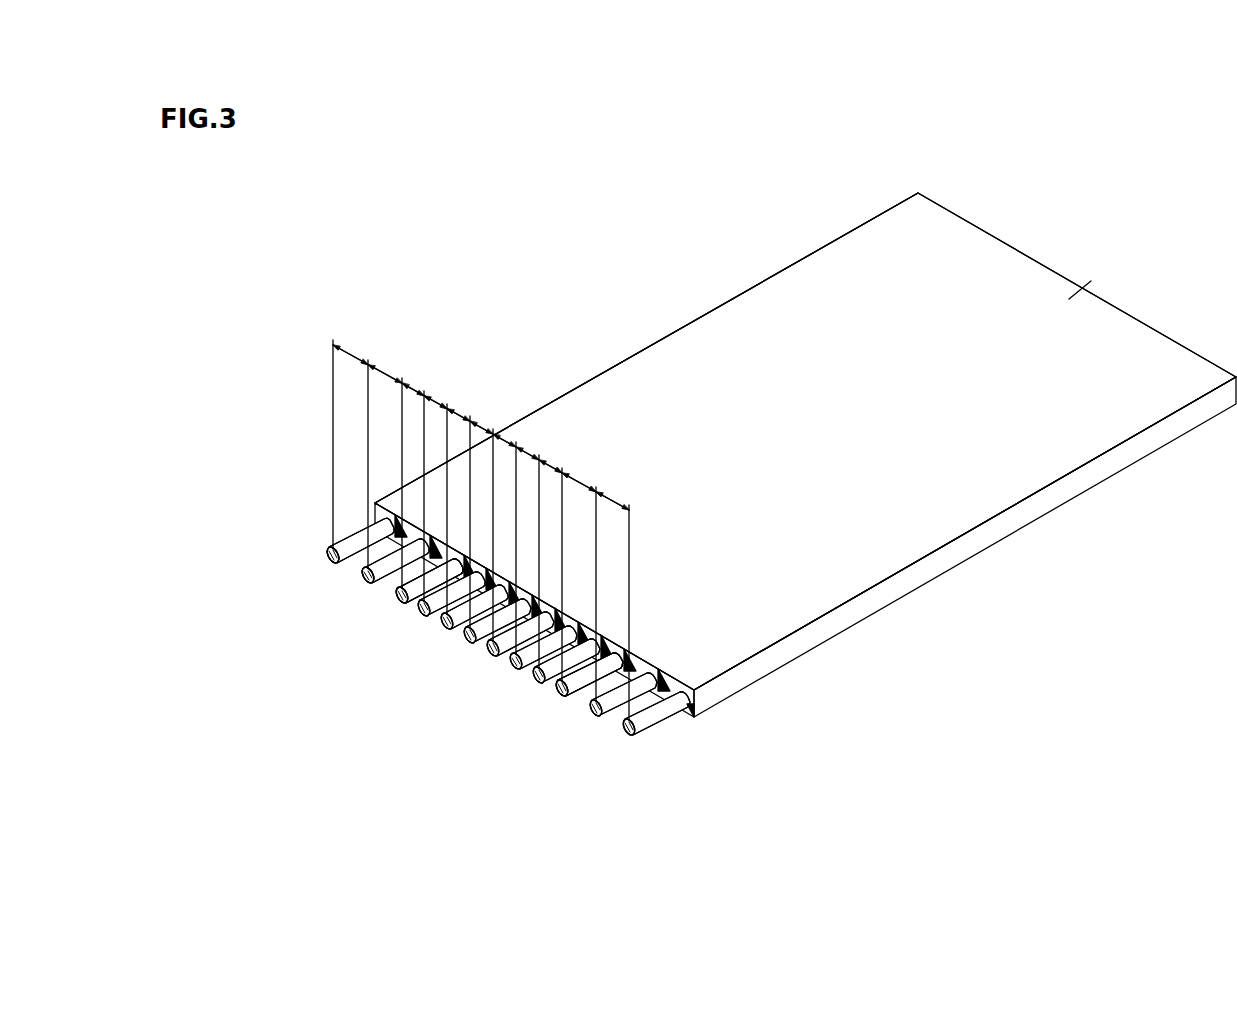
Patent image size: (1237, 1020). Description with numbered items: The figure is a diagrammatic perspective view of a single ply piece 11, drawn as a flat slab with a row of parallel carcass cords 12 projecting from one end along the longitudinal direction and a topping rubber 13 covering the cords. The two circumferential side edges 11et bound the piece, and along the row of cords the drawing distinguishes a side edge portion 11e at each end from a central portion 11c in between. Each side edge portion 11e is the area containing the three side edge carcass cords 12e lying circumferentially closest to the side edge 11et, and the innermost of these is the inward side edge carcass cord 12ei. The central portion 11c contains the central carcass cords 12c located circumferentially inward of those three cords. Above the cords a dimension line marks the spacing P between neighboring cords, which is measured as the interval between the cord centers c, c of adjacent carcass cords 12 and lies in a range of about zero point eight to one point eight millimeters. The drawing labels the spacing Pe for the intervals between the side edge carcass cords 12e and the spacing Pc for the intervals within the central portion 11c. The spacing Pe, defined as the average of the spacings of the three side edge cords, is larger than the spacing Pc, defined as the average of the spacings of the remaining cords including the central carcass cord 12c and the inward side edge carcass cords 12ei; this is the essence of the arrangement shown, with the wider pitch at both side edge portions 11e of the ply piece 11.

The ply piece 11 is at (797, 316).
The side edge 11et is at (641, 352).
The side edge portion 11e is at (302, 657).
The central portion 11c is at (452, 752).
The carcass cord 12 is at (353, 562).
The side edge carcass cord 12e is at (383, 574).
The inward side edge carcass cord 12ei is at (415, 607).
The central carcass cord 12c is at (550, 685).
The topping rubber 13 is at (891, 512).
The cord center c is at (326, 556).
The spacing P is at (351, 355).
The spacing in the side edge portion Pe is at (386, 374).
The spacing in the central portion Pc is at (437, 402).